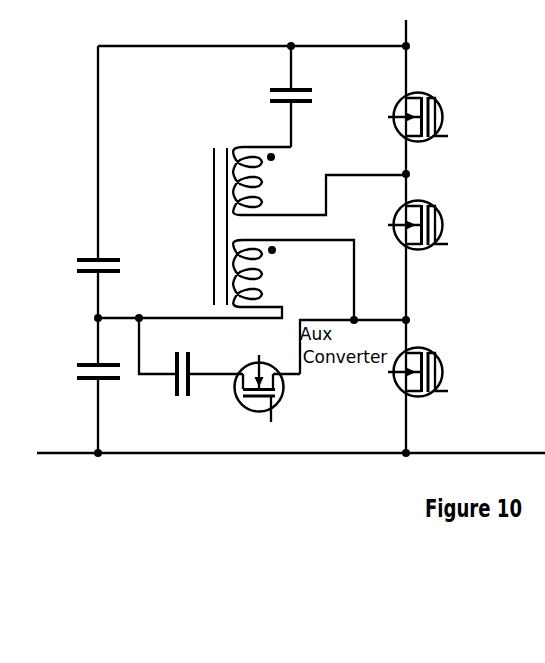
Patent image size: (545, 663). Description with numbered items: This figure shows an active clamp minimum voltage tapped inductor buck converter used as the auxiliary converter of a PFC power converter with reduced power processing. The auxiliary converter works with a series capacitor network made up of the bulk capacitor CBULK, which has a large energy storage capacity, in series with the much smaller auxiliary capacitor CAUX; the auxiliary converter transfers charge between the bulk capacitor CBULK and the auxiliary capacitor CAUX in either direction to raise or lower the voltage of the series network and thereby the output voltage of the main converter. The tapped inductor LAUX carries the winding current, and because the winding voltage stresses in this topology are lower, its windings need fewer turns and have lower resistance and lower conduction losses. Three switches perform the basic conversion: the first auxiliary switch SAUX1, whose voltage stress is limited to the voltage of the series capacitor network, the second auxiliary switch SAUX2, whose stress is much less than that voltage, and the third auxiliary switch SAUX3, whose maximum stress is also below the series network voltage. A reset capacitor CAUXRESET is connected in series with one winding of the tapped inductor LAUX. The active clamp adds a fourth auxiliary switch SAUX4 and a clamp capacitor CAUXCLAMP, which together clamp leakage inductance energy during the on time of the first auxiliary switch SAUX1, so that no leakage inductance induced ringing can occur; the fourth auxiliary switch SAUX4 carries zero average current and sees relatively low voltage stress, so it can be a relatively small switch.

The reset capacitor CAUXRESET is at (329, 96).
The tapped inductor LAUX is at (252, 233).
The bulk capacitor CBULK is at (76, 268).
The auxiliary capacitor CAUX is at (79, 375).
The clamp capacitor CAUXCLAMP is at (191, 368).
The first auxiliary switch SAUX1 is at (419, 213).
The second auxiliary switch SAUX2 is at (419, 361).
The third auxiliary switch SAUX3 is at (419, 105).
The fourth auxiliary switch SAUX4 is at (277, 389).